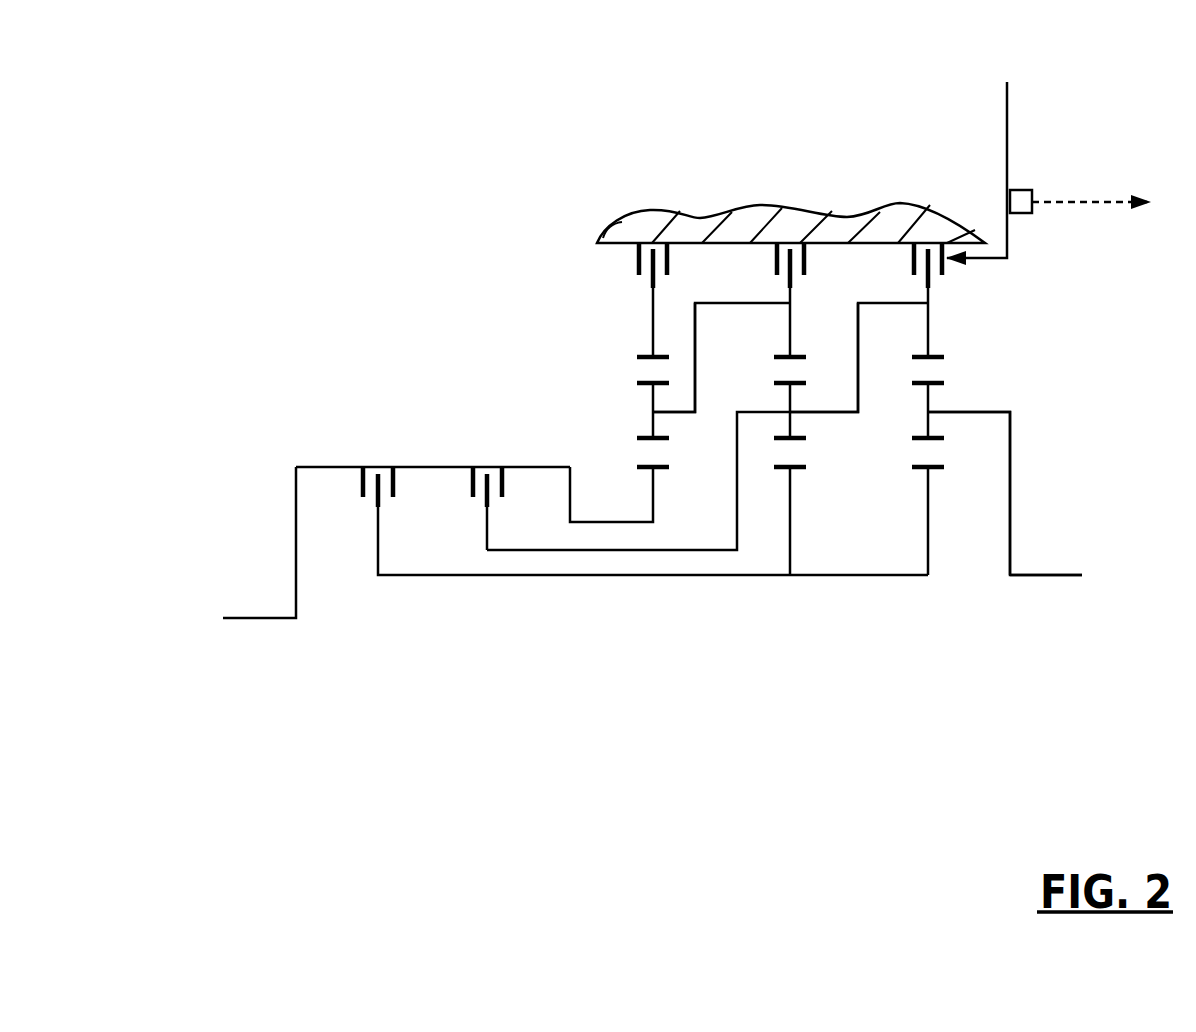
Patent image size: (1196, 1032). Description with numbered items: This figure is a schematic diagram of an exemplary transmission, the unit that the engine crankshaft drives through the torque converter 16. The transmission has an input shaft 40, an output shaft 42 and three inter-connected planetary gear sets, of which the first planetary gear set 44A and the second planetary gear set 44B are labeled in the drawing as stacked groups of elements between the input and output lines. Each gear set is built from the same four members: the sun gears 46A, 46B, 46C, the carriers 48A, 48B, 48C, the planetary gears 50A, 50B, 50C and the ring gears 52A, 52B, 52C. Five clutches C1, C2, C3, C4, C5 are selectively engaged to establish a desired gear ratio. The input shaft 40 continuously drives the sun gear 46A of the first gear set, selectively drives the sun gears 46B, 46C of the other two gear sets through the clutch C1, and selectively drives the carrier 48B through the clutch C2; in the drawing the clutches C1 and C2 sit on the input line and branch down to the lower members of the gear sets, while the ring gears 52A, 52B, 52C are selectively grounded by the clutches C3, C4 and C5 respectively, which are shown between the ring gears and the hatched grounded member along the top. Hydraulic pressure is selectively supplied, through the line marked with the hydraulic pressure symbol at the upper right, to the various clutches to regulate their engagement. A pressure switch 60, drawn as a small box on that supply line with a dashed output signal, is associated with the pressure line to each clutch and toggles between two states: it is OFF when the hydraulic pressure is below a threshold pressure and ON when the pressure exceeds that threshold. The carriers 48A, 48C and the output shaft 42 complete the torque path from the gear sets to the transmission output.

The torque converter 16 is at (450, 277).
The input shaft 40 is at (237, 618).
The output shaft 42 is at (1065, 575).
The planetary gear set 44A is at (598, 353).
The planetary gear set 44B is at (830, 492).
The sun gear 46A is at (648, 467).
The sun gear 46B is at (800, 472).
The sun gear 46C is at (930, 472).
The carrier 48A is at (687, 412).
The carrier 48B is at (838, 413).
The carrier 48C is at (971, 414).
The planetary gears 50A is at (653, 418).
The planetary gears 50B is at (787, 402).
The planetary gears 50C is at (930, 397).
The ring gear 52A is at (647, 353).
The ring gear 52B is at (786, 355).
The ring gear 52C is at (933, 353).
The pressure switch 60 is at (1018, 190).
The clutch C1 is at (360, 477).
The clutch C2 is at (470, 477).
The clutch C3 is at (637, 258).
The clutch C4 is at (776, 259).
The clutch C5 is at (913, 258).